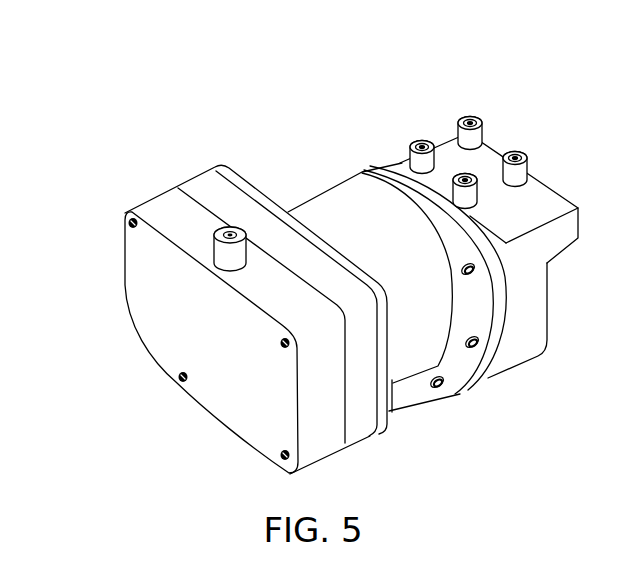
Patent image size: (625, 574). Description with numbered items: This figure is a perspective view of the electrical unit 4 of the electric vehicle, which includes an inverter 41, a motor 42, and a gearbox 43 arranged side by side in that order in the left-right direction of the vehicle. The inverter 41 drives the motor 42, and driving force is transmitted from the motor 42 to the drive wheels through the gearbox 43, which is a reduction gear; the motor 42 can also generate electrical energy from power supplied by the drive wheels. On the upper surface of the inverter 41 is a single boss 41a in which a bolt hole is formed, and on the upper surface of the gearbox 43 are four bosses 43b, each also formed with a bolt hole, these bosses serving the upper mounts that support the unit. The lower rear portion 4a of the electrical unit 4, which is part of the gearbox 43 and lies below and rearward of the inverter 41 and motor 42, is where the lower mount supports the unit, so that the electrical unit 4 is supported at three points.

The electrical unit 4 is at (396, 57).
The lower rear portion 4a is at (392, 412).
The inverter 41 is at (245, 213).
The boss 41a is at (216, 248).
The motor 42 is at (352, 218).
The gearbox 43 is at (458, 160).
The bosses 43b is at (485, 118).